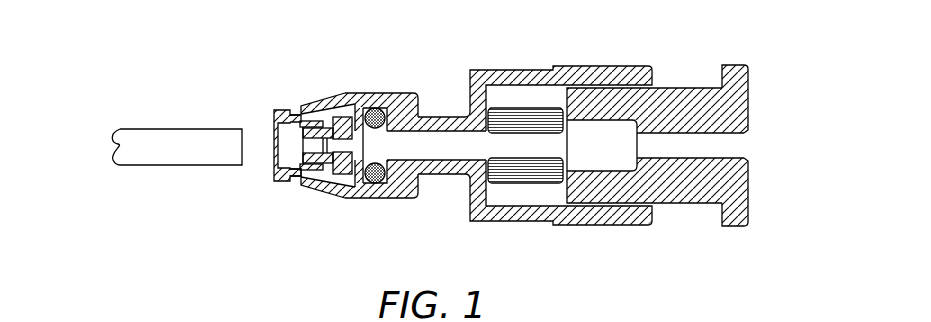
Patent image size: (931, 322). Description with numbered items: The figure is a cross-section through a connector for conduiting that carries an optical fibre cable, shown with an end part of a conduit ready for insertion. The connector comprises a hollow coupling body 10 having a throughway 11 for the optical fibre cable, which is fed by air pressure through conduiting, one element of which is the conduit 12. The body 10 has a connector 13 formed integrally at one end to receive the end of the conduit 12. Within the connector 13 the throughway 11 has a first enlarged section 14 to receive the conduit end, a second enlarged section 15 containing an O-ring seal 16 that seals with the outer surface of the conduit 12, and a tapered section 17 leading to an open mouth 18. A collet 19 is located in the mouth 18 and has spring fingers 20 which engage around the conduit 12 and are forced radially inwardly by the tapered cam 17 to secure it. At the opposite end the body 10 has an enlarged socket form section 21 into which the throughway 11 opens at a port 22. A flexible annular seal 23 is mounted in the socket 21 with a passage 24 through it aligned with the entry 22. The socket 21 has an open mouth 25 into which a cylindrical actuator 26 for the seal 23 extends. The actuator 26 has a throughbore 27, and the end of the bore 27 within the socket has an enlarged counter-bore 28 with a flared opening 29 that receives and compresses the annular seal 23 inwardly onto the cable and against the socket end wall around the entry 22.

The hollow body 10 is at (446, 60).
The throughway 11 is at (442, 147).
The conduit 12 is at (175, 128).
The connector 13 is at (363, 93).
The first enlarged section 14 is at (407, 157).
The second enlarged section 15 is at (348, 197).
The O-ring seal 16 is at (376, 110).
The tapered section 17 is at (338, 93).
The open mouth 18 is at (300, 108).
The collet 19 is at (285, 148).
The spring fingers 20 is at (312, 183).
The socket form section 21 is at (537, 75).
The port 22 is at (470, 158).
The flexible annular seal 23 is at (525, 115).
The passage 24 is at (528, 180).
The open mouth 25 is at (633, 75).
The cylindrical actuator 26 is at (662, 97).
The throughbore 27 is at (717, 133).
The enlarged counter-bore 28 is at (615, 163).
The flared opening 29 is at (572, 118).